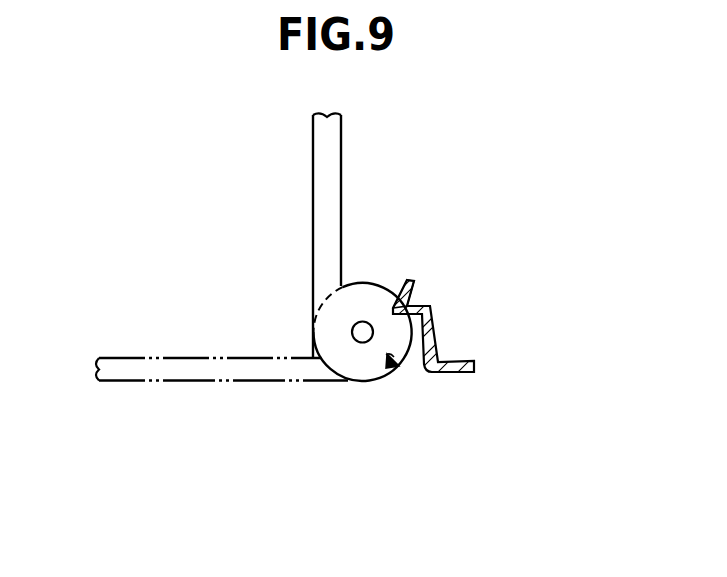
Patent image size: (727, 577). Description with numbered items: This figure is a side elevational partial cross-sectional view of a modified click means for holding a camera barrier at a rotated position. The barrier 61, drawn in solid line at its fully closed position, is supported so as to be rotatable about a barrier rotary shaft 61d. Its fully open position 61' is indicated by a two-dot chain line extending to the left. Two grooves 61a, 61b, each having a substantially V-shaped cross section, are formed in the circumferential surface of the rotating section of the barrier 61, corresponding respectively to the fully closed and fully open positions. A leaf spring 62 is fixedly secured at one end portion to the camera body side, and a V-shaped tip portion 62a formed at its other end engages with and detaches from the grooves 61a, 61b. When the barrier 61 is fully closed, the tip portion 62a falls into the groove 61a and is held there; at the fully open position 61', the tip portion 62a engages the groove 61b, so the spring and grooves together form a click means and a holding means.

The barrier 61 is at (363, 235).
The fully open position of the barrier 61' is at (222, 340).
The groove 61a is at (397, 306).
The groove 61b is at (397, 366).
The barrier rotary shaft 61d is at (358, 335).
The leaf spring 62 is at (439, 340).
The tip portion 62a is at (416, 282).